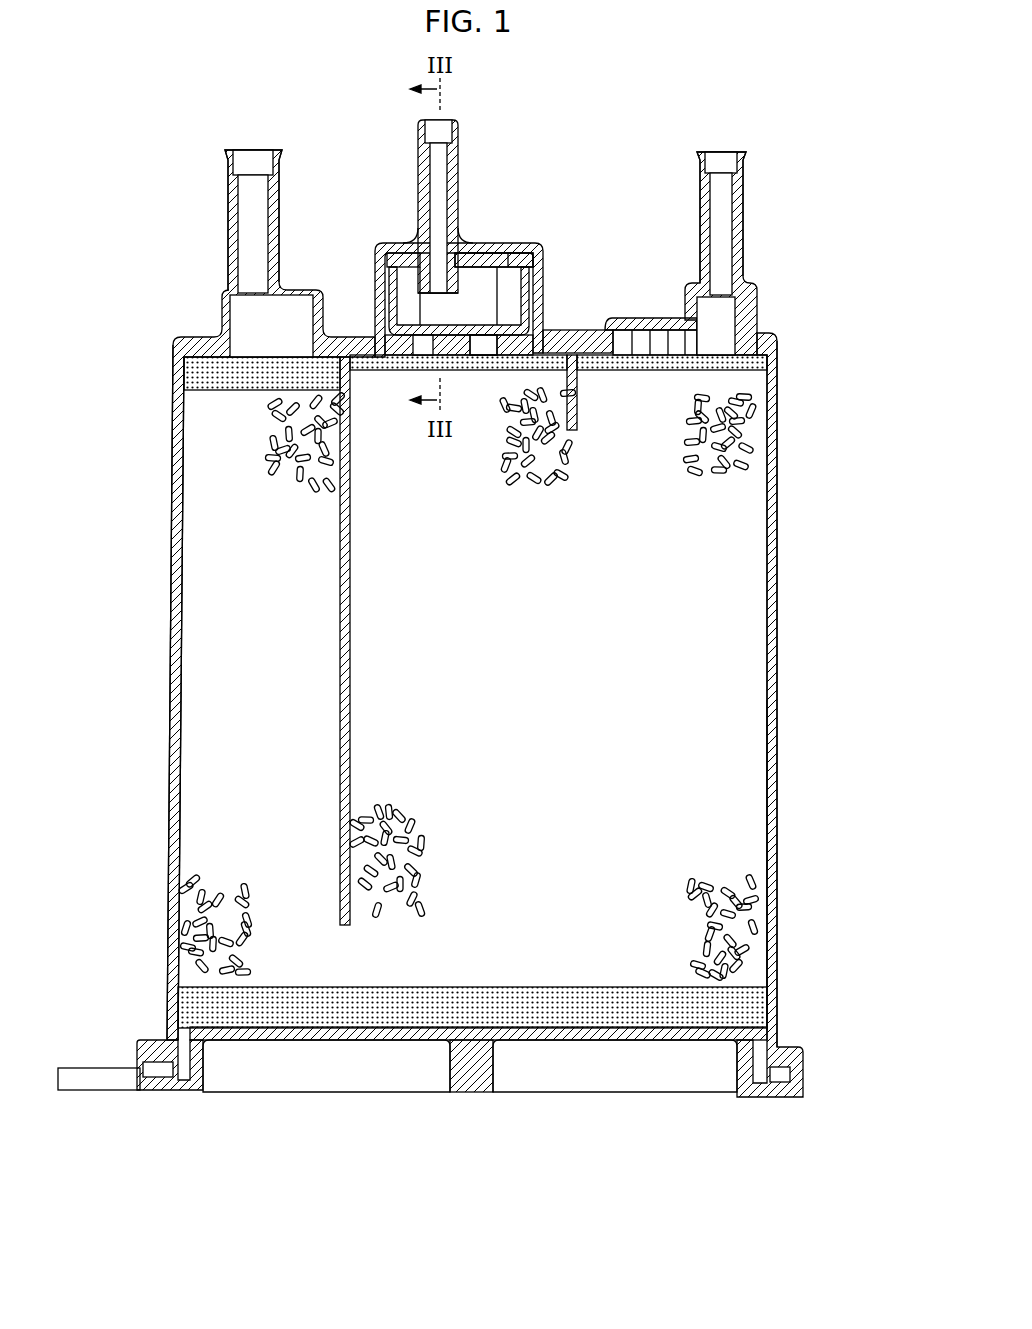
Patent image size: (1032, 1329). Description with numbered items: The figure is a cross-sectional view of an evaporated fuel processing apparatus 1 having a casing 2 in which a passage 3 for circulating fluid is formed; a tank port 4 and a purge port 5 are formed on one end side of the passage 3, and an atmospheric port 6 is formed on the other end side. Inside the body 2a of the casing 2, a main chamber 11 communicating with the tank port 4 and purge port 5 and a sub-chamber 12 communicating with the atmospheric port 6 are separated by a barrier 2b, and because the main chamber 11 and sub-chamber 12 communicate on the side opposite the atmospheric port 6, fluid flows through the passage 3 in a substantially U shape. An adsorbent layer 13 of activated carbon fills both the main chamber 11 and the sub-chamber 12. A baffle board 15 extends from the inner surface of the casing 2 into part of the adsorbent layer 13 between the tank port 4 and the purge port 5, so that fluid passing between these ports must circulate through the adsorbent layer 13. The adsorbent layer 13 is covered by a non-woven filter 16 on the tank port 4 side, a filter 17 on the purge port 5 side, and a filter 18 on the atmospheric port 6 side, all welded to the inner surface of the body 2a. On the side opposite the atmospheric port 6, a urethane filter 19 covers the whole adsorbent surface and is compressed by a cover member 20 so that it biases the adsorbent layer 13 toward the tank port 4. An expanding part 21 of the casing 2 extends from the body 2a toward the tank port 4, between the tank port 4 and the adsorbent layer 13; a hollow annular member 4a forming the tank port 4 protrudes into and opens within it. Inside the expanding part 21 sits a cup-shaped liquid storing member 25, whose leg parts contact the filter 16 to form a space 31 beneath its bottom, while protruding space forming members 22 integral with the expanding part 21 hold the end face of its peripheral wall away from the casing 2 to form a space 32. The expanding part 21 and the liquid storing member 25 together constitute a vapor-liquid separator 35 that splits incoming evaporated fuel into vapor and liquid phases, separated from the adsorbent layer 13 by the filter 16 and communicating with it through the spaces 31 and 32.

The evaporated fuel processing apparatus 1 is at (464, 623).
The casing 2 is at (775, 833).
The body 2a is at (170, 650).
The barrier 2b is at (343, 648).
The passage 3 is at (751, 637).
The tank port 4 is at (456, 148).
The hollow annular member 4a is at (423, 278).
The purge port 5 is at (743, 186).
The atmospheric port 6 is at (232, 226).
The main chamber 11 is at (751, 738).
The sub-chamber 12 is at (196, 537).
The adsorbent layer 13 is at (745, 566).
The baffle board 15 is at (578, 430).
The filter 16 is at (397, 371).
The filter 17 is at (650, 371).
The filter 18 is at (238, 392).
The filter 19 is at (474, 987).
The cover member 20 is at (474, 1093).
The expanding part 21 is at (541, 266).
The space forming members 22 is at (398, 258).
The liquid storing member 25 is at (531, 294).
The space 31 is at (474, 353).
The space 32 is at (486, 261).
The vapor-liquid separator 35 is at (471, 231).